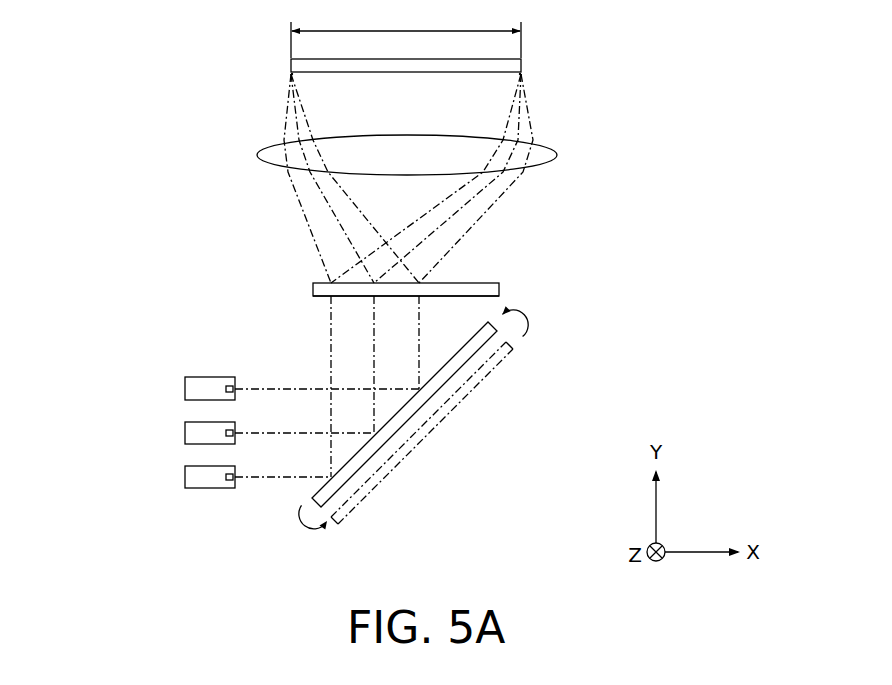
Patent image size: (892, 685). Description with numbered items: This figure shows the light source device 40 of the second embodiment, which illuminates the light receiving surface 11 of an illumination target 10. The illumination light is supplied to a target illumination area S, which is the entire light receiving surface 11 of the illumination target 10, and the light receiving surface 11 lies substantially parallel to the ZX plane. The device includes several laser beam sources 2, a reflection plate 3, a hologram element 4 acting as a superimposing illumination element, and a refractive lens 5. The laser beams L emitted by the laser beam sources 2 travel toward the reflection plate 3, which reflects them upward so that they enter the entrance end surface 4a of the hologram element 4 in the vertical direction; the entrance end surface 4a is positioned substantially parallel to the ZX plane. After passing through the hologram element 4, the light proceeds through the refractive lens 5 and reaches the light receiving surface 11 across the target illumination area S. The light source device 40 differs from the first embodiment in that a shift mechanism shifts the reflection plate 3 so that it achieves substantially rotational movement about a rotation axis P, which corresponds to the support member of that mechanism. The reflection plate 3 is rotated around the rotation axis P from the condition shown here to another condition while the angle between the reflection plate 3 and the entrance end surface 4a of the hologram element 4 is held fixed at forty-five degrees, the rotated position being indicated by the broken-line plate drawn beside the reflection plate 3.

The light source device 40 is at (676, 105).
The illumination target 10 is at (521, 66).
The light receiving surface 11 is at (312, 74).
The target illumination area S is at (406, 33).
The refractive lens 5 is at (557, 155).
The hologram element 4 is at (499, 288).
The entrance end surface 4a is at (320, 302).
The laser beam sources 2 is at (185, 388).
The laser beams L is at (277, 388).
The reflection plate 3 is at (313, 491).
The rotation axis P is at (413, 423).